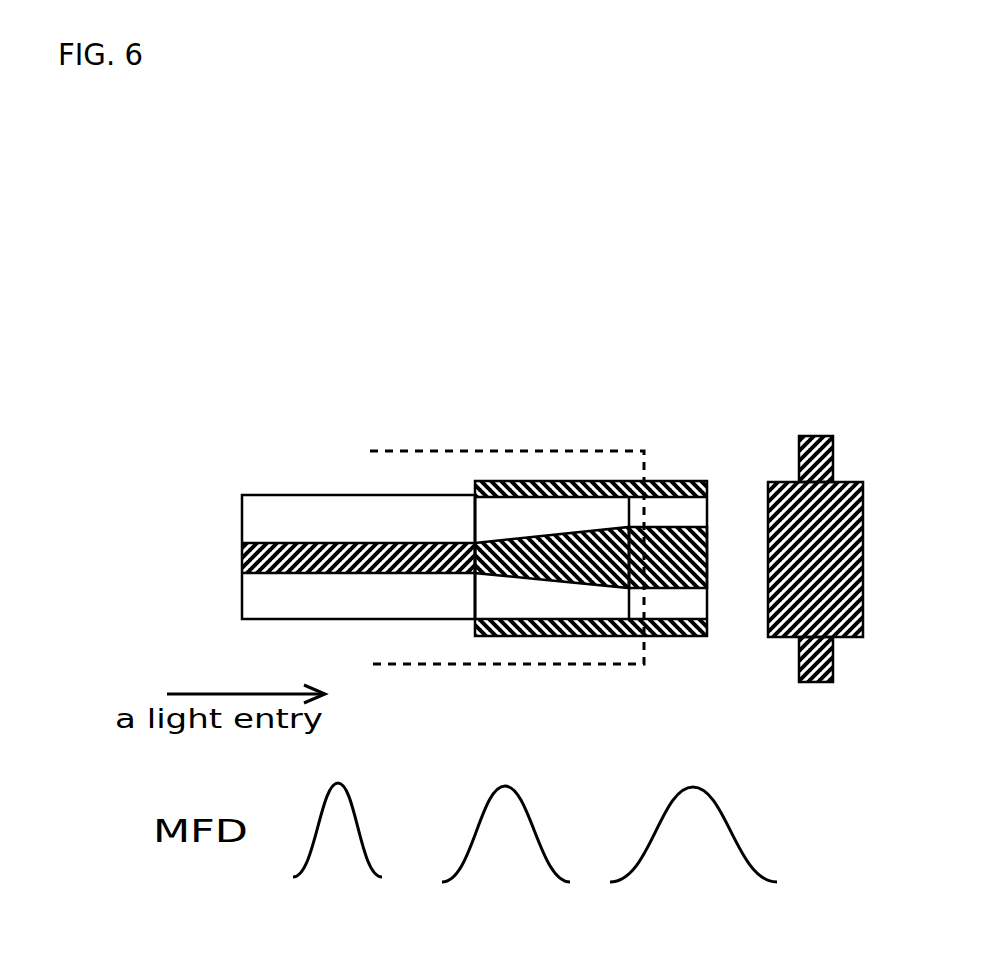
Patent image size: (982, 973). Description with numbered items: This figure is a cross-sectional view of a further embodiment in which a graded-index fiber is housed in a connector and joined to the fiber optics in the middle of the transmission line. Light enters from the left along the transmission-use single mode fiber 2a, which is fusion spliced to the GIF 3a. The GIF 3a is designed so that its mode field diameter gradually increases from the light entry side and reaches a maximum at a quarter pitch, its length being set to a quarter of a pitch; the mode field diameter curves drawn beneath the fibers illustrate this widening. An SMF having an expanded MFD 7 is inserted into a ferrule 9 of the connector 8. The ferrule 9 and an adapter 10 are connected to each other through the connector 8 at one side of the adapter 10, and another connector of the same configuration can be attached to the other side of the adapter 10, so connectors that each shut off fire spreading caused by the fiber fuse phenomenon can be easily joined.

The transmission-use single mode fiber 2a is at (303, 525).
The GIF 3a is at (505, 515).
The SMF having an expanded MFD 7 is at (663, 513).
The connector 8 is at (440, 453).
The ferrule 9 is at (592, 487).
The adapter 10 is at (818, 437).